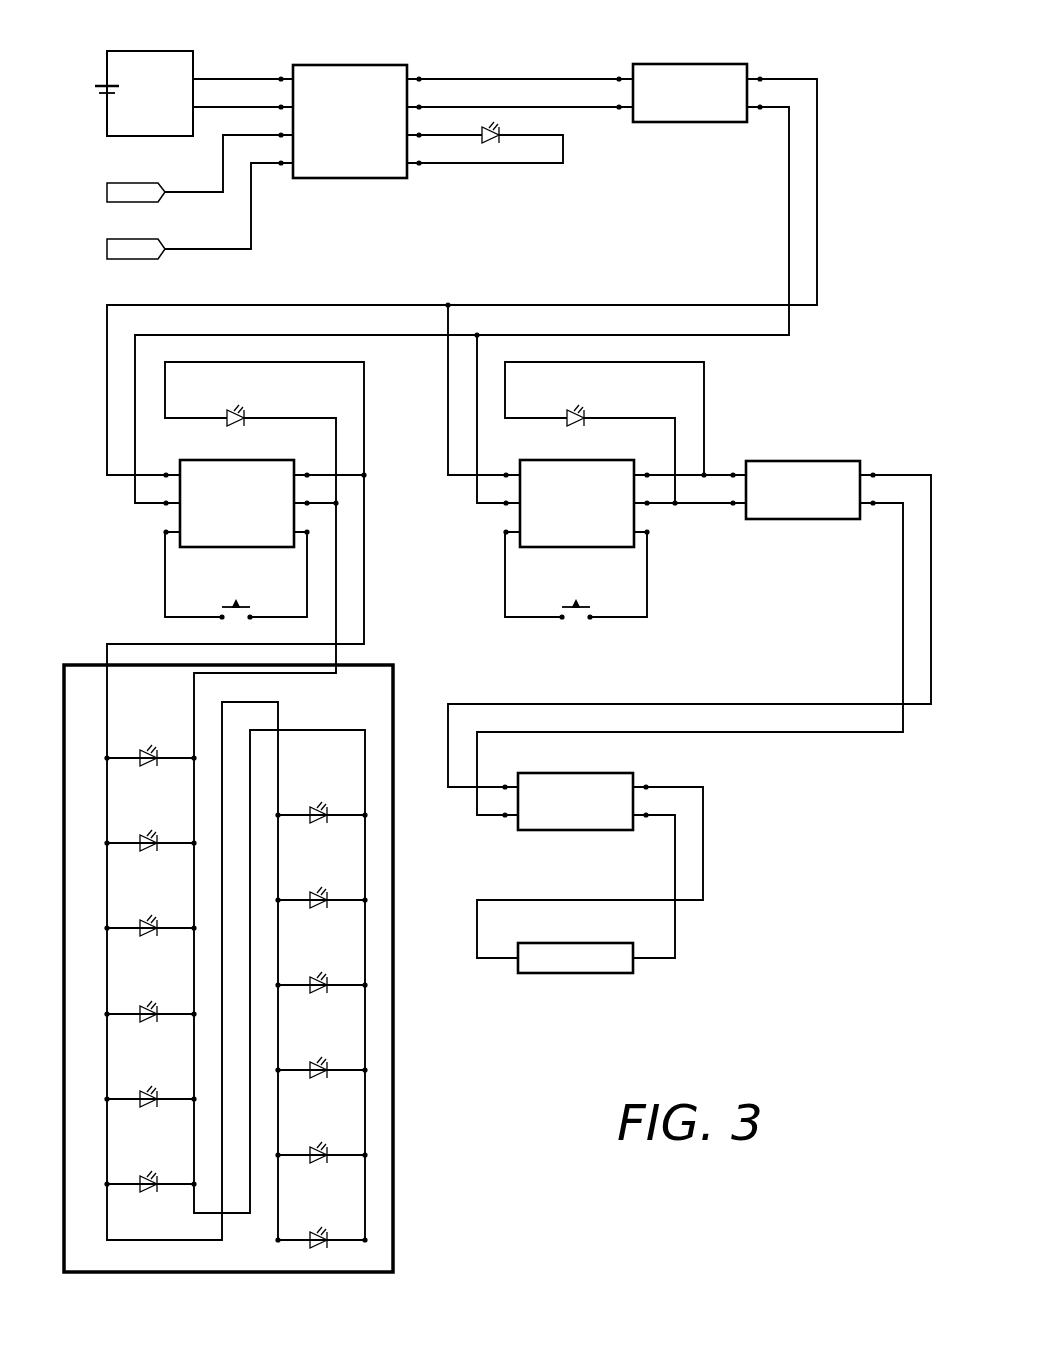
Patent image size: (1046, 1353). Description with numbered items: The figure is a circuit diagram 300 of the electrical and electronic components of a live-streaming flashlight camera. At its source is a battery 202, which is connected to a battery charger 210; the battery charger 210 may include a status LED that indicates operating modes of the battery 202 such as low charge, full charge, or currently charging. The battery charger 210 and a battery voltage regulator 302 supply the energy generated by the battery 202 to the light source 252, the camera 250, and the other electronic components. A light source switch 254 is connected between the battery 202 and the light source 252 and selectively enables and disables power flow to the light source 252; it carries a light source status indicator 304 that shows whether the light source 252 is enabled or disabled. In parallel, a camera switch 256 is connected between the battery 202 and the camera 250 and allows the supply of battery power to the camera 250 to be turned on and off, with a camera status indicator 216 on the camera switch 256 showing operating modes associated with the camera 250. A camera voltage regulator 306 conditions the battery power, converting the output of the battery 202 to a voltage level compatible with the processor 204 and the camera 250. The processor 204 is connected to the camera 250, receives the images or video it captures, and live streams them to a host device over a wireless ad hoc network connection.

The circuit diagram 300 is at (855, 66).
The battery 202 is at (105, 84).
The battery charger 210 is at (350, 64).
The battery voltage regulator 302 is at (690, 63).
The light source status indicator 304 is at (236, 362).
The camera status indicator 216 is at (582, 362).
The light source switch 254 is at (235, 459).
The camera switch 256 is at (585, 459).
The camera voltage regulator 306 is at (794, 460).
The light source 252 is at (85, 664).
The processor 204 is at (569, 772).
The camera 250 is at (569, 942).